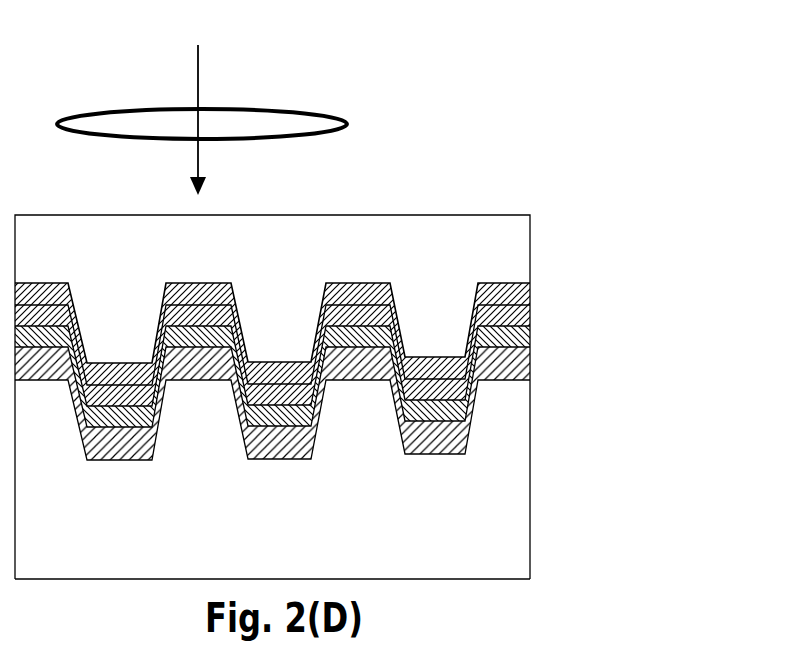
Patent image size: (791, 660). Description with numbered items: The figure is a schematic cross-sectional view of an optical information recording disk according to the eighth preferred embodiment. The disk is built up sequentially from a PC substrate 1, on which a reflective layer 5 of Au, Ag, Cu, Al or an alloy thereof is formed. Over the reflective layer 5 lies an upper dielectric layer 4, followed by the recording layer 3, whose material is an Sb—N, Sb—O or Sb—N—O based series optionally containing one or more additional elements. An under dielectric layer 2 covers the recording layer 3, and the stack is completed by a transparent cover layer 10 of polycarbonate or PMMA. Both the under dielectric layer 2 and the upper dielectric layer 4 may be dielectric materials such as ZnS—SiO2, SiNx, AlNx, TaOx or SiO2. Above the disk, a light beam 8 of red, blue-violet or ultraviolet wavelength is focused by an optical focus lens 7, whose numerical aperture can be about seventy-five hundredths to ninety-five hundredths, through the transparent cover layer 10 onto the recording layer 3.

The PC substrate 1 is at (520, 448).
The under dielectric layer 2 is at (528, 295).
The recording layer 3 is at (528, 315).
The upper dielectric layer 4 is at (528, 337).
The reflective layer 5 is at (528, 365).
The optical focus lens 7 is at (313, 112).
The light beam 8 is at (198, 70).
The transparent cover layer 10 is at (520, 242).